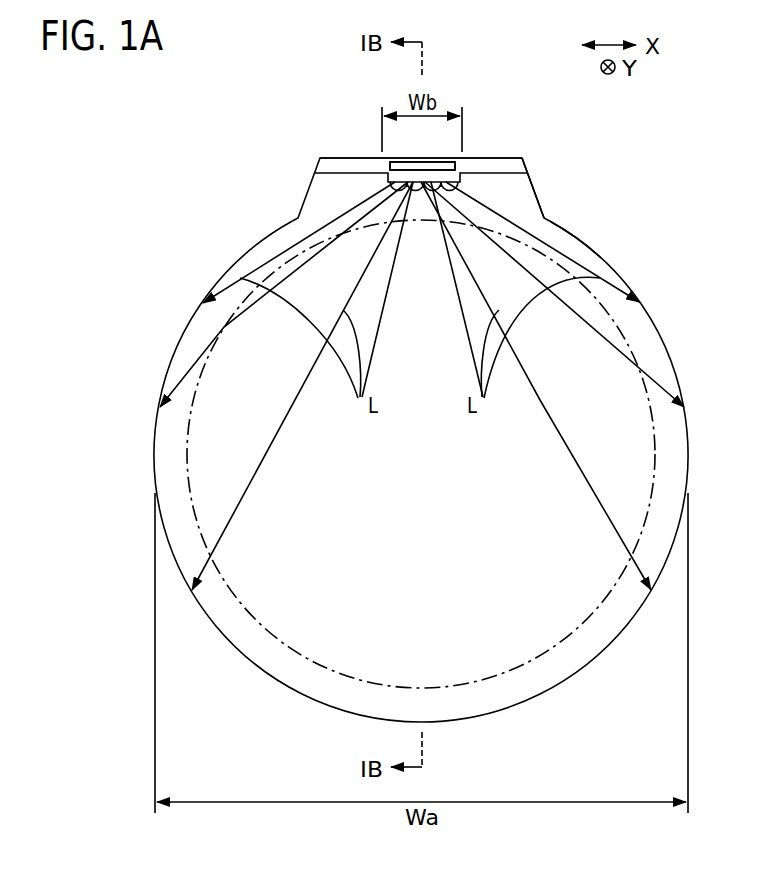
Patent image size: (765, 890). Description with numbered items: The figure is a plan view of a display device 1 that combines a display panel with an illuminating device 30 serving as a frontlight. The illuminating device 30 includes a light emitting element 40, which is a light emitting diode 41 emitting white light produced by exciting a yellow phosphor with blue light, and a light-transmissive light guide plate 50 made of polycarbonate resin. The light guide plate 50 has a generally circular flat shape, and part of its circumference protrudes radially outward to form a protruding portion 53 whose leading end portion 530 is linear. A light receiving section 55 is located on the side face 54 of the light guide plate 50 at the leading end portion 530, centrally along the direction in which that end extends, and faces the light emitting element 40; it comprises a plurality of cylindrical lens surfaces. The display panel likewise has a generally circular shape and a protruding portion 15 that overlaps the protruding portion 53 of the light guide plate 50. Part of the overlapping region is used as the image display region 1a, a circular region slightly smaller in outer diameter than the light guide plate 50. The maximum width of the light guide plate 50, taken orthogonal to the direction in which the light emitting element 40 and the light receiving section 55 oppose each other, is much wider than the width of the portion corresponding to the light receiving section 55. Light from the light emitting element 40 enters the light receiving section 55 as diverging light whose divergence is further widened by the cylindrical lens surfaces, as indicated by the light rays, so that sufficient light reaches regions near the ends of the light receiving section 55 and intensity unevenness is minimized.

The display device 1 is at (687, 216).
The image display region 1a is at (620, 328).
The protruding portion 15 is at (494, 158).
The illuminating device 30 is at (214, 145).
The light emitting element 40 is at (404, 163).
The light emitting diode 41 is at (352, 159).
The light guide plate 50 is at (287, 229).
The protruding portion 53 is at (536, 192).
The side face 54 is at (591, 248).
The light receiving section 55 is at (386, 178).
The leading end portion 530 is at (501, 172).